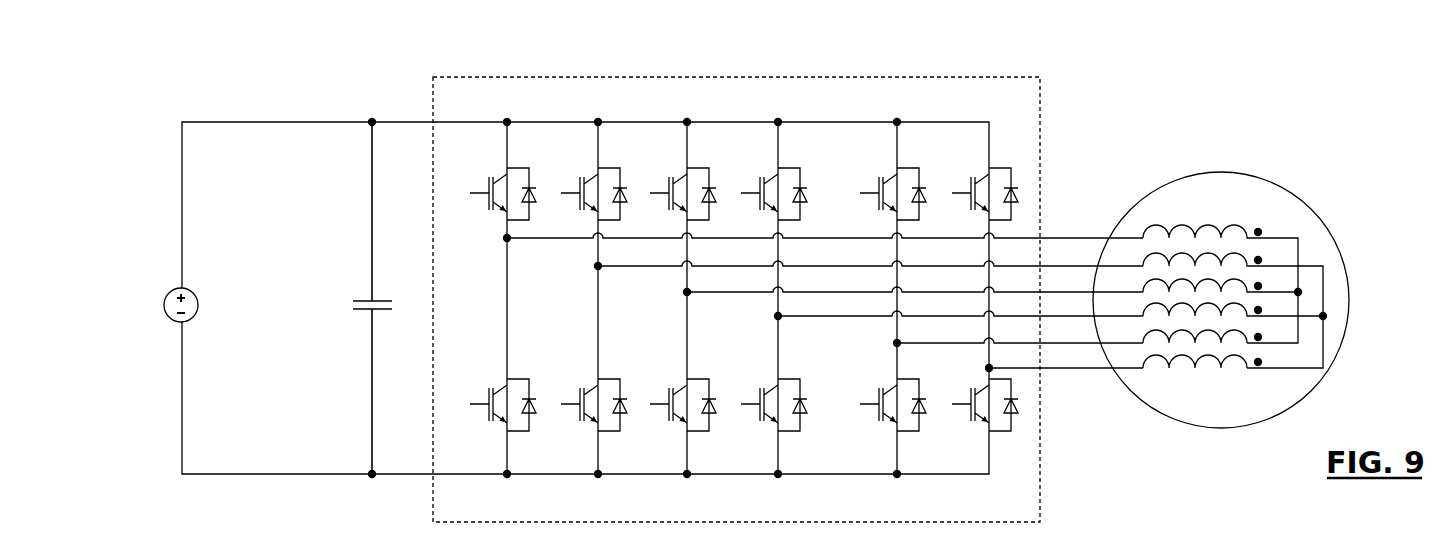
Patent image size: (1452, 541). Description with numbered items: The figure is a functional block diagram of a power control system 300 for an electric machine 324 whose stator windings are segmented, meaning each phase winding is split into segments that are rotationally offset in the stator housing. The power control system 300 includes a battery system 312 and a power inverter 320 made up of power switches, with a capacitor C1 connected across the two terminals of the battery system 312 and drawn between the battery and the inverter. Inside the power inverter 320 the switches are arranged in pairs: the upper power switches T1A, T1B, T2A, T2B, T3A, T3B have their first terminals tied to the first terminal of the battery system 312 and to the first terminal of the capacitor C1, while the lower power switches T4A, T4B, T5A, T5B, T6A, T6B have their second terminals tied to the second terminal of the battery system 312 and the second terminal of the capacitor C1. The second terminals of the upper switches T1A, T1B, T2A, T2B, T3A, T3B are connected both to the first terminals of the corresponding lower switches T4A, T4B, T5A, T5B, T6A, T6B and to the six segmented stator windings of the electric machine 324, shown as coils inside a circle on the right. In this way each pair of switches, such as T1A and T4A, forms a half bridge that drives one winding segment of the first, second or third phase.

The power control system 300 is at (212, 74).
The battery system 312 is at (166, 294).
The power inverter 320 is at (688, 77).
The electric machine 324 is at (1220, 172).
The capacitor C1 is at (365, 298).
The power switch T1A is at (494, 187).
The power switch T1B is at (587, 187).
The power switch T2A is at (675, 187).
The power switch T2B is at (767, 187).
The power switch T3A is at (881, 187).
The power switch T3B is at (973, 187).
The power switch T4A is at (494, 415).
The power switch T4B is at (587, 415).
The power switch T5A is at (675, 415).
The power switch T5B is at (767, 415).
The power switch T6A is at (881, 415).
The power switch T6B is at (973, 415).